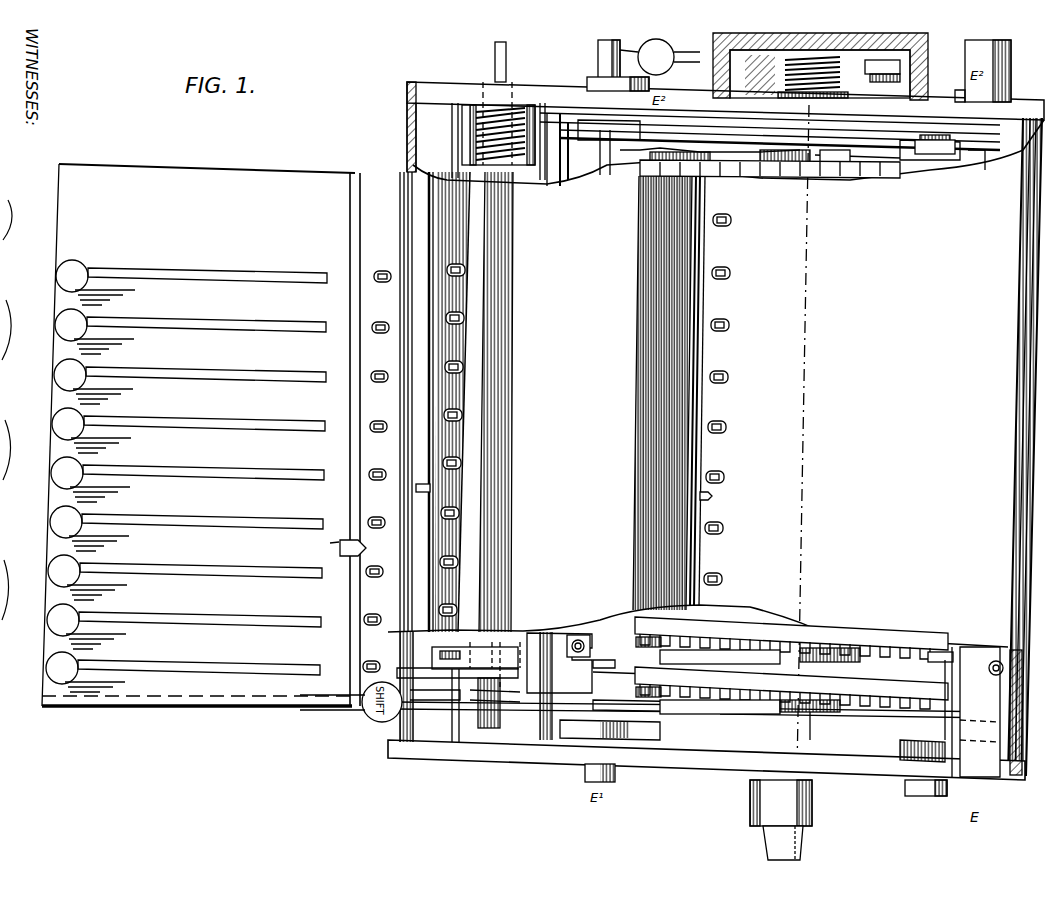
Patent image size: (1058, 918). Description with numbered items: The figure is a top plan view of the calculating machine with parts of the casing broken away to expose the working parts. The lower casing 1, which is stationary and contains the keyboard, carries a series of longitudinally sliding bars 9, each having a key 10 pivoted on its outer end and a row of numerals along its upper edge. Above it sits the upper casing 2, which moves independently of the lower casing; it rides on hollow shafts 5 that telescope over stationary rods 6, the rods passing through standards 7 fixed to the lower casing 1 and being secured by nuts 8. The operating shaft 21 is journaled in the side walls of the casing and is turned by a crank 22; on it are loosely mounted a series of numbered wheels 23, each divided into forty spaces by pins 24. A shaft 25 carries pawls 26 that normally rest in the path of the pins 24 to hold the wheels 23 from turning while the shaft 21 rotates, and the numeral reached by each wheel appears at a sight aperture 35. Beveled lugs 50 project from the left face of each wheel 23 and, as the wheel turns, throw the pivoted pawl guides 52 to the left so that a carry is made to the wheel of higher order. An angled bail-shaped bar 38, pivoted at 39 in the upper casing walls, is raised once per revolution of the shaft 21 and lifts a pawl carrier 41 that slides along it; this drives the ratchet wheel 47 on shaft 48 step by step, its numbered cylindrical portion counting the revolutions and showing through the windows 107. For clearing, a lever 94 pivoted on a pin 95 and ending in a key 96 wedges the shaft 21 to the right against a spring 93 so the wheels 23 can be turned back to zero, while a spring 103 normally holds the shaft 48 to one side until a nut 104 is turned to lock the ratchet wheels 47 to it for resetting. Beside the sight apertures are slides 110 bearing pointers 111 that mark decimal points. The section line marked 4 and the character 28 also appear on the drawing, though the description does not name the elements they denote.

The casing of the lower portion 1 is at (732, 134).
The upper casing 2 is at (1006, 547).
The main shaft housing 4 is at (820, 418).
The hollow shafts 5 is at (605, 155).
The rods 6 is at (978, 165).
The standards 7 is at (598, 66).
The nuts 8 is at (1005, 55).
The longitudinally sliding bars 9 is at (148, 680).
The key 10 is at (55, 667).
The operating shaft 21 is at (808, 92).
The crank 22 is at (802, 845).
The wheels 23 is at (850, 665).
The pins 24 is at (842, 700).
The shaft 25 is at (968, 705).
The pawls 26 is at (946, 792).
The key stems 28 is at (390, 328).
The sight aperture 35 is at (726, 428).
The angled bail-shaped bar 38 is at (559, 172).
The pivots of the bail-shaped bar 39 is at (930, 155).
The pawl carrier 41 is at (546, 652).
The ratchet wheel 47 is at (478, 684).
The shaft 48 is at (478, 705).
The beveled lugs 50 is at (690, 616).
The pawl guides 52 is at (645, 650).
The spring 93 is at (812, 100).
The clearing lever 94 is at (793, 77).
The pin 95 is at (882, 78).
The key 96 is at (638, 52).
The spring 103 is at (490, 110).
The nut 104 is at (506, 58).
The windows 107 is at (463, 367).
The slides 110 is at (430, 518).
The pointers 111 is at (450, 489).